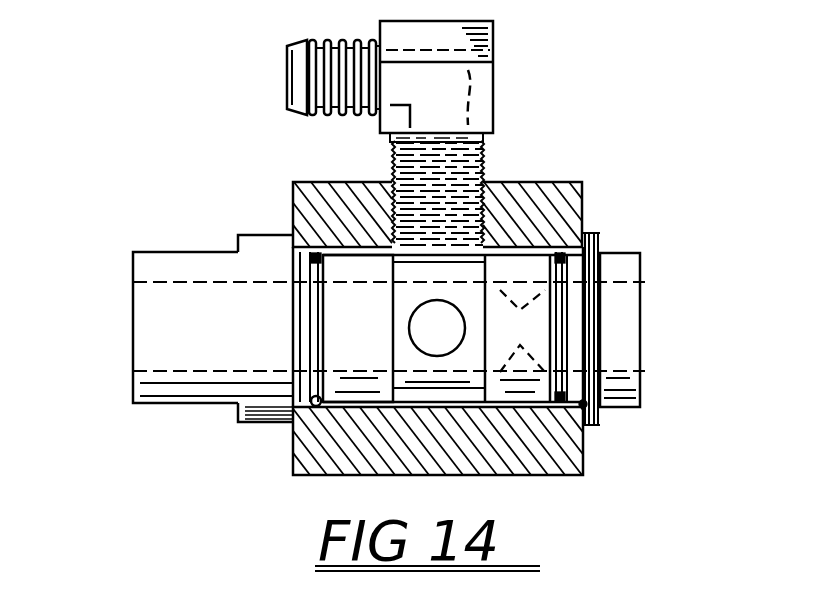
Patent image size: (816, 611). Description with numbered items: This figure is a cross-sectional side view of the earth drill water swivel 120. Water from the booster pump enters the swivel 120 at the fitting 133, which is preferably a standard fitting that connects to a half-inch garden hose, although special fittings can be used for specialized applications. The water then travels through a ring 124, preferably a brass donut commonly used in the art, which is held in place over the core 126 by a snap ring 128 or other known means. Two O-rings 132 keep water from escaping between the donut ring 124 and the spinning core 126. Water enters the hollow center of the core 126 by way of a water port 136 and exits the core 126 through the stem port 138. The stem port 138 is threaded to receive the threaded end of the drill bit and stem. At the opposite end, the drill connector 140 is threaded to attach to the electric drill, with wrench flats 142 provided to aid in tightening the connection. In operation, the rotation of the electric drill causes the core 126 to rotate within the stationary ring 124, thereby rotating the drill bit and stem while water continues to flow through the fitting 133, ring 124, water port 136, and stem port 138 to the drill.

The earth drill water swivel 120 is at (561, 124).
The ring 124 is at (582, 183).
The core 126 is at (237, 238).
The snap ring 128 is at (592, 241).
The O-rings 132 is at (296, 248).
The fitting 133 is at (287, 43).
The water port 136 is at (457, 350).
The stem port 138 is at (640, 325).
The drill connector 140 is at (133, 316).
The wrench flats 142 is at (173, 404).